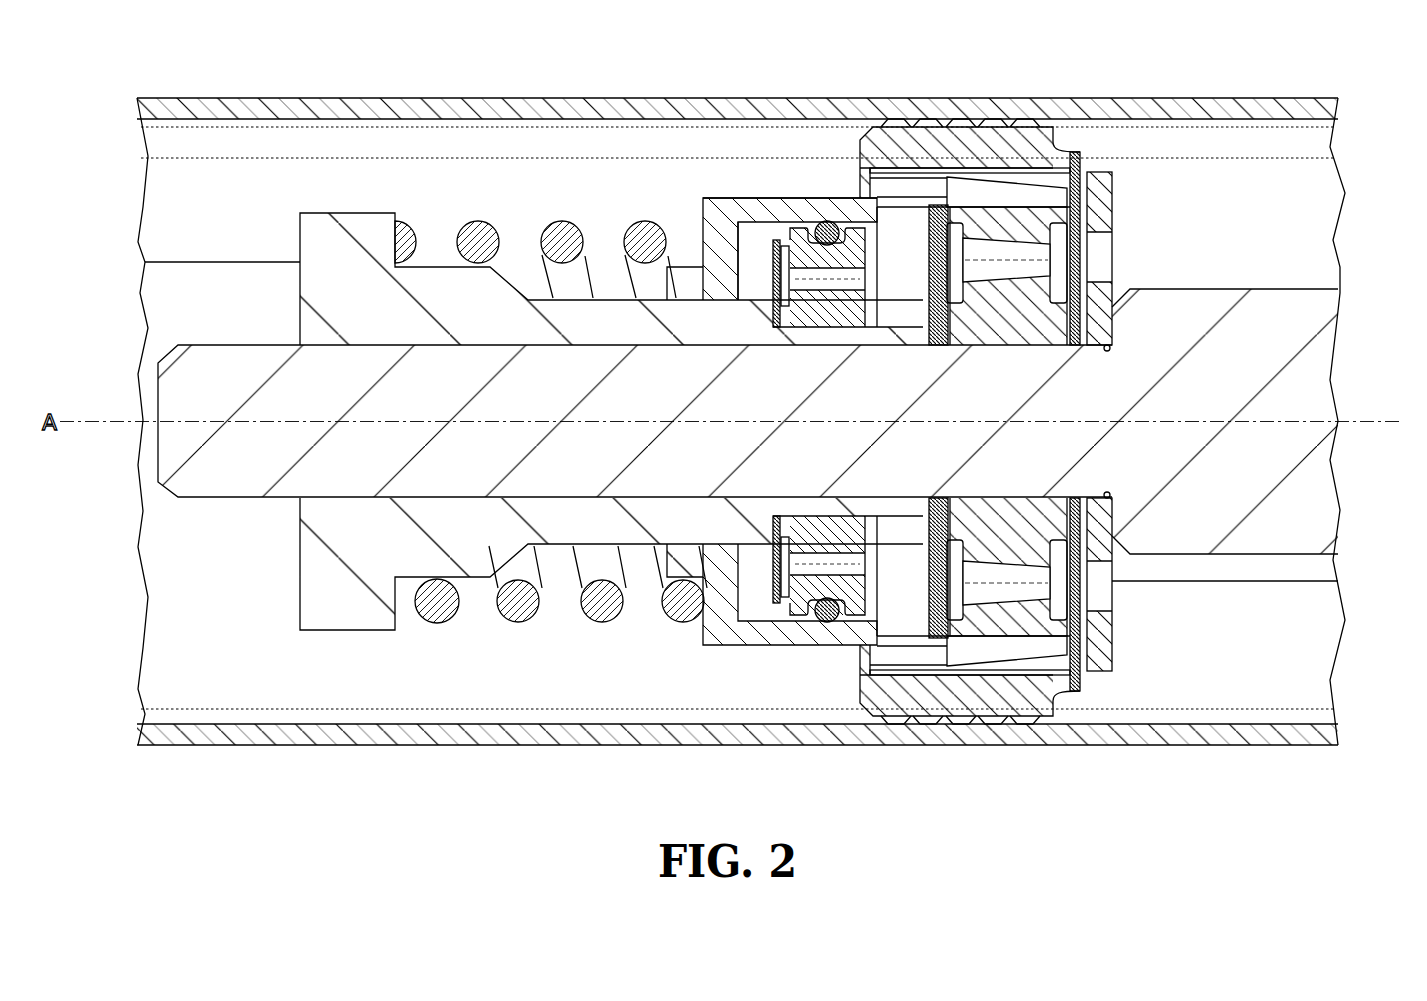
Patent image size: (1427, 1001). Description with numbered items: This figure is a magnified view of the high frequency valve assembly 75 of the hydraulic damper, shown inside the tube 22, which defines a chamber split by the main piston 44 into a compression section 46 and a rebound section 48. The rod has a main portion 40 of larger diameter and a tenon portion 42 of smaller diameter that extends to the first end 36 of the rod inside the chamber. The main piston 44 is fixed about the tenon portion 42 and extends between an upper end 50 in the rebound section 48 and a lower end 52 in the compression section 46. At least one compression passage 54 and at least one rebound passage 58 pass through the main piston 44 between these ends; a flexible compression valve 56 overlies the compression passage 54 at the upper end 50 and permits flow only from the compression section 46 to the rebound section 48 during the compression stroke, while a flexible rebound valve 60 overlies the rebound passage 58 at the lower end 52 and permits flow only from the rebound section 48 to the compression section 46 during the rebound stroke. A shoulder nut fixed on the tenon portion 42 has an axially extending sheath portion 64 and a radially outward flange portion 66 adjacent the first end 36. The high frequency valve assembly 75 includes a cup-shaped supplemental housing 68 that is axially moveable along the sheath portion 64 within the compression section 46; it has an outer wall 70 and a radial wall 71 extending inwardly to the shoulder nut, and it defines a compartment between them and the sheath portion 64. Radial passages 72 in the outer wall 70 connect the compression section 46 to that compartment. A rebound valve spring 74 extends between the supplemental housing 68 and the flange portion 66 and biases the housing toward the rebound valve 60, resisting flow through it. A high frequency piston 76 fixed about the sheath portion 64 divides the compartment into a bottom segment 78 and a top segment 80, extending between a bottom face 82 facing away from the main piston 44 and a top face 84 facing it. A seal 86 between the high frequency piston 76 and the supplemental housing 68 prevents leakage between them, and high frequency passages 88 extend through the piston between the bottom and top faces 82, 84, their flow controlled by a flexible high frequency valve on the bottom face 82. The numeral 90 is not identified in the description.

The tube 22 is at (332, 108).
The first end 36 is at (158, 393).
The main portion 40 is at (1268, 482).
The tenon portion 42 is at (452, 447).
The main piston 44 is at (958, 120).
The compression section 46 is at (232, 297).
The rebound section 48 is at (1258, 650).
The upper end 50 is at (1065, 206).
The lower end 52 is at (872, 170).
The compression passage 54 is at (912, 700).
The compression valve 56 is at (1077, 648).
The rebound passage 58 is at (1035, 262).
The rebound valve 60 is at (930, 210).
The sheath portion 64 is at (552, 520).
The flange portion 66 is at (337, 595).
The supplemental housing 68 is at (715, 198).
The outer wall 70 is at (760, 196).
The radial wall 71 is at (720, 237).
The radial passages 72 is at (824, 220).
The rebound valve spring 74 is at (440, 600).
The high frequency valve assembly 75 is at (684, 632).
The high frequency piston 76 is at (803, 590).
The bottom segment 78 is at (775, 292).
The top segment 80 is at (915, 305).
The bottom face 82 is at (773, 583).
The top face 84 is at (948, 645).
The seal 86 is at (831, 622).
The high frequency passages 88 is at (890, 285).
The bore 90 is at (832, 280).